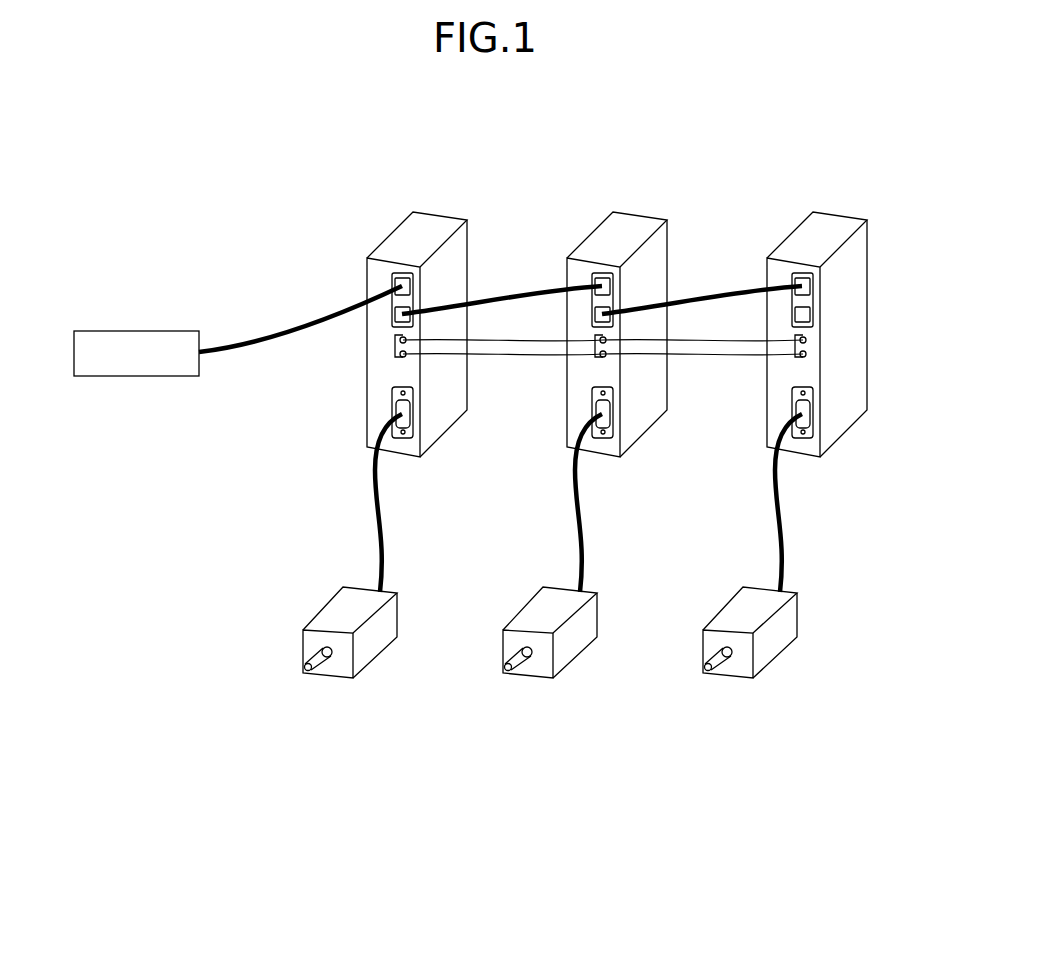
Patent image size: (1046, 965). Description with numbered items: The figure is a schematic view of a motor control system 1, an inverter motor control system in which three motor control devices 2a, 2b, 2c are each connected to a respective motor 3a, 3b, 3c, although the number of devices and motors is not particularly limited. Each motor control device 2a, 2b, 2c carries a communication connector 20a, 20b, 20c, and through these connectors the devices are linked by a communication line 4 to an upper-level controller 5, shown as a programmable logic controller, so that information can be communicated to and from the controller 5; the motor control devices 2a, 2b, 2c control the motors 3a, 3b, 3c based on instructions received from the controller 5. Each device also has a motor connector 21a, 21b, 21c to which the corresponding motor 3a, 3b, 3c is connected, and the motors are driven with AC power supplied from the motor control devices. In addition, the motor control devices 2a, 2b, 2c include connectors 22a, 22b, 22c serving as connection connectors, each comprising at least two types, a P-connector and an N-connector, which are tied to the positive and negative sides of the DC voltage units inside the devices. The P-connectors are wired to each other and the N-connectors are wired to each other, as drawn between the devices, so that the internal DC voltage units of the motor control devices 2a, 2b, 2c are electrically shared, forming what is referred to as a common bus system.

The motor control system 1 is at (388, 760).
The motor control device 2a is at (438, 215).
The motor control device 2b is at (639, 319).
The motor control device 2c is at (805, 319).
The motor 3a is at (370, 651).
The motor 3b is at (572, 556).
The motor 3c is at (771, 556).
The communication line 4 is at (284, 331).
The controller 5 is at (167, 331).
The communication connector 20a is at (409, 297).
The communication connector 20b is at (665, 287).
The communication connector 20c is at (863, 287).
The motor connector 21a is at (415, 427).
The motor connector 21b is at (646, 426).
The motor connector 21c is at (845, 426).
The connector 22a is at (394, 344).
The connector 22b is at (639, 363).
The connector 22c is at (741, 363).